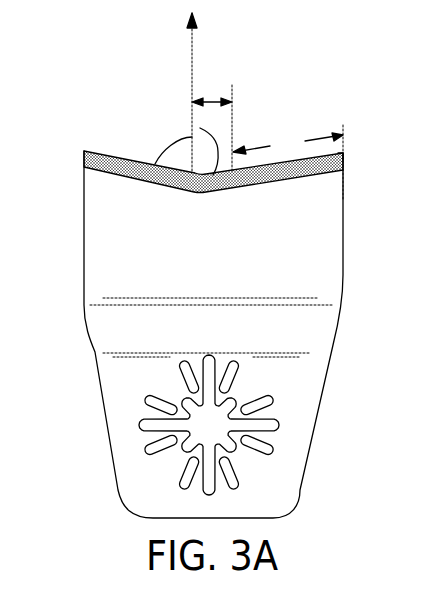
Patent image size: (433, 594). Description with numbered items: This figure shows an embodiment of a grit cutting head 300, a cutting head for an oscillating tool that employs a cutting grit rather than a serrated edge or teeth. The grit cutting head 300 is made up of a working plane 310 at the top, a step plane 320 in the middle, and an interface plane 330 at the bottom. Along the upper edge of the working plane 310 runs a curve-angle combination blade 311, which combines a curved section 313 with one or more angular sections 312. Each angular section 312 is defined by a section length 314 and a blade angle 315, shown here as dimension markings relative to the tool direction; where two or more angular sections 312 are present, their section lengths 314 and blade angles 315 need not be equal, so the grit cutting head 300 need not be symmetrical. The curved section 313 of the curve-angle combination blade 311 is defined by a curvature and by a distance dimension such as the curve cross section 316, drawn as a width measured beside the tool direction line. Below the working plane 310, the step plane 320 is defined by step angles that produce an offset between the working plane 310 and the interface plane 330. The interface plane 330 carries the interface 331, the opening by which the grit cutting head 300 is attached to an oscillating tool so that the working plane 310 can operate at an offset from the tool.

The grit cutting head 300 is at (87, 85).
The working plane 310 is at (345, 273).
The curve-angle combination blade 311 is at (273, 184).
The angular section 312 is at (343, 152).
The curved section 313 is at (200, 128).
The section length 314 is at (288, 143).
The blade angle 315 is at (170, 138).
The curve cross section 316 is at (213, 98).
The step plane 320 is at (340, 328).
The interface plane 330 is at (317, 401).
The interface 331 is at (262, 437).